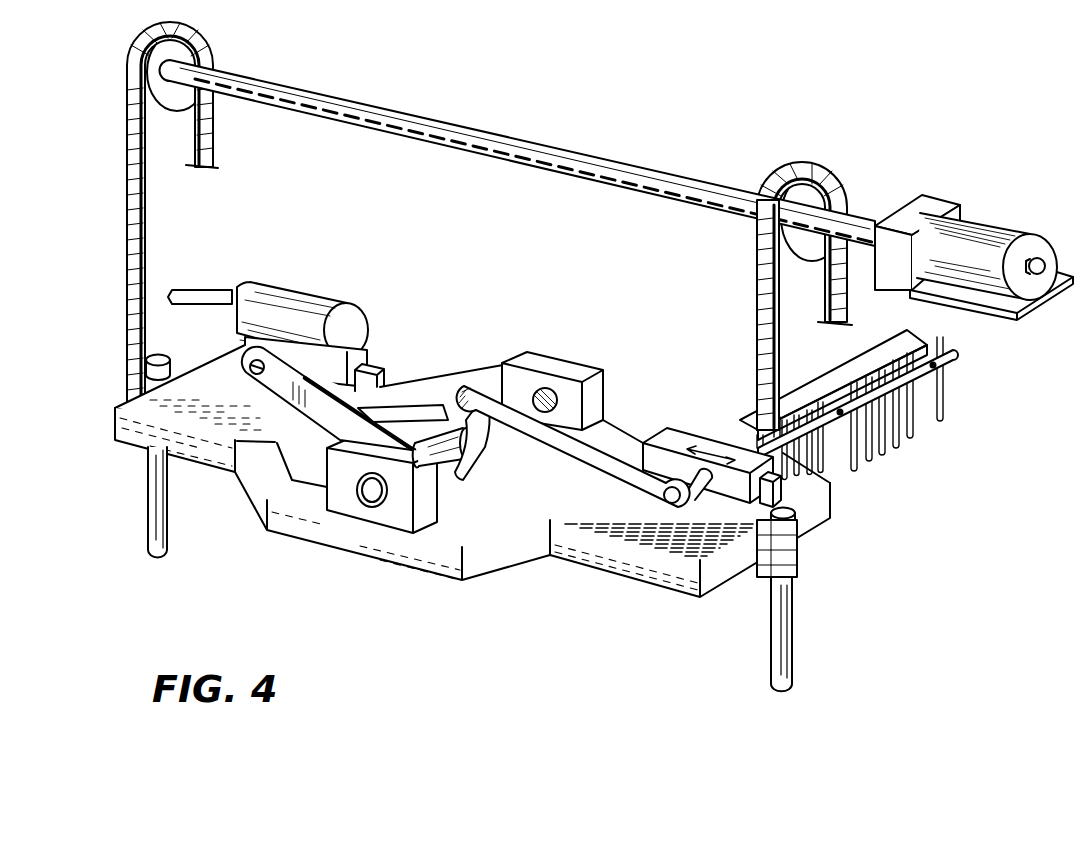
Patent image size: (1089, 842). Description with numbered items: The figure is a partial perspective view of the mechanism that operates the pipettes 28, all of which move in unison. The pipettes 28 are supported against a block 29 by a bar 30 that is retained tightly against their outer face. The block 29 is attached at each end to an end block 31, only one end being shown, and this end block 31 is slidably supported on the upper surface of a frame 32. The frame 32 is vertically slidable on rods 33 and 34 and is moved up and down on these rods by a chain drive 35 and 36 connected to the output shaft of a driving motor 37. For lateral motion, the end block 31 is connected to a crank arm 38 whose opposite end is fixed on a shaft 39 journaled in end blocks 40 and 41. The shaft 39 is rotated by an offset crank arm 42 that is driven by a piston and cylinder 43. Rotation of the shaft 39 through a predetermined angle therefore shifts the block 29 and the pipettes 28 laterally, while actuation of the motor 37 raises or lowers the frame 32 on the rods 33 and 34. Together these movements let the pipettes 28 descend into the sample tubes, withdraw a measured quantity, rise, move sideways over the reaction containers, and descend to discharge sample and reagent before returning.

The pipettes 28 is at (822, 469).
The block 29 is at (910, 344).
The bar 30 is at (956, 353).
The end block 31 is at (672, 440).
The frame 32 is at (641, 565).
The rod 33 is at (792, 657).
The rod 34 is at (165, 538).
The chain drive 35 is at (145, 262).
The chain drive 36 is at (757, 325).
The driving motor 37 is at (990, 243).
The crank arm 38 is at (608, 462).
The shaft 39 is at (537, 396).
The end block 40 is at (568, 372).
The end block 41 is at (393, 515).
The offset crank arm 42 is at (377, 418).
The piston and cylinder 43 is at (318, 302).